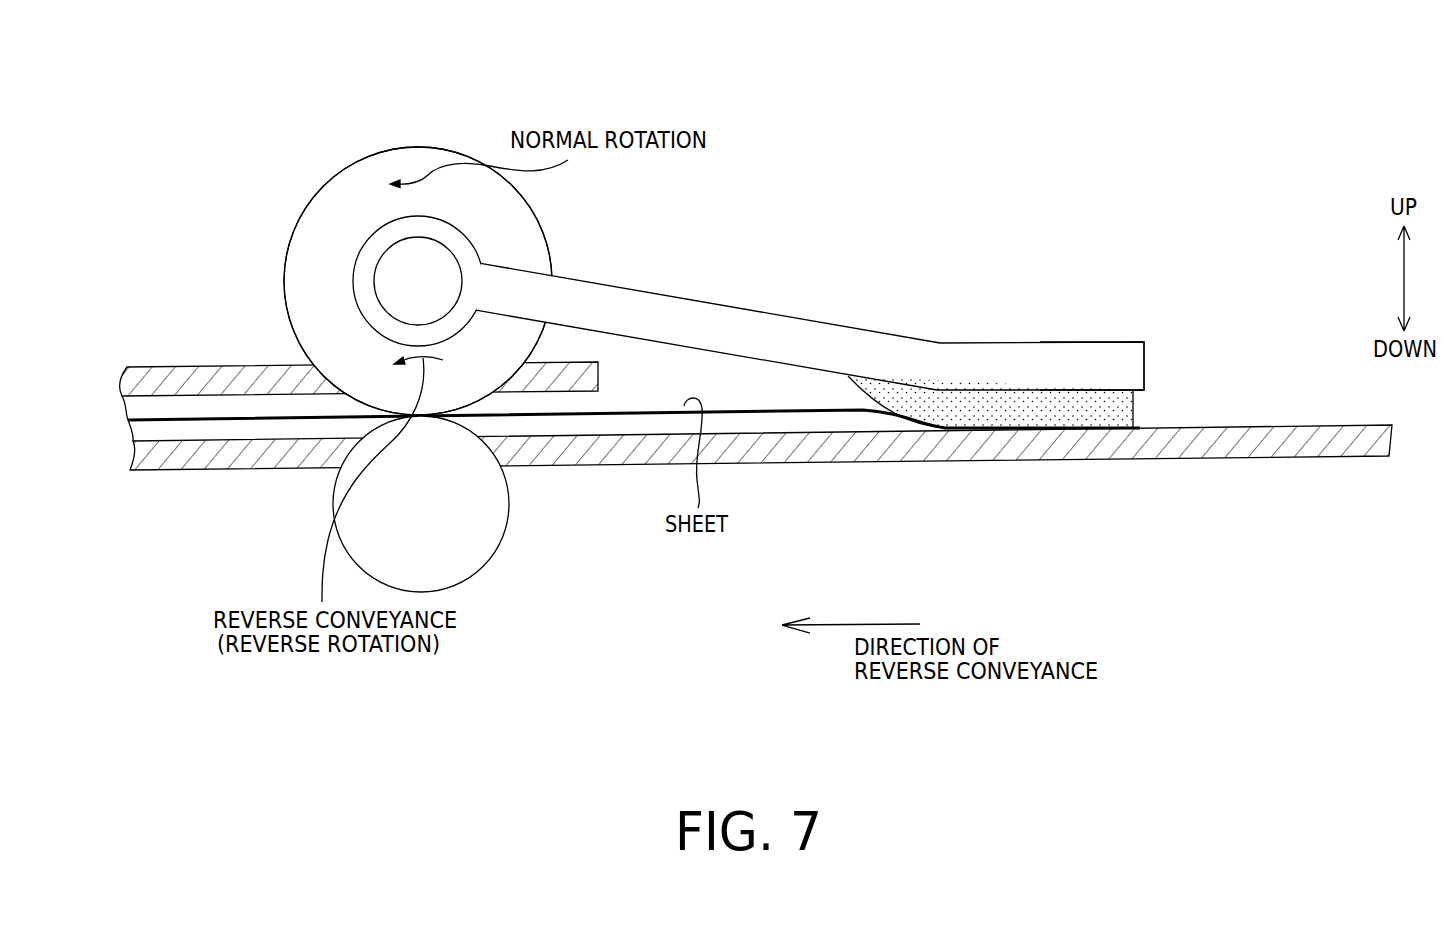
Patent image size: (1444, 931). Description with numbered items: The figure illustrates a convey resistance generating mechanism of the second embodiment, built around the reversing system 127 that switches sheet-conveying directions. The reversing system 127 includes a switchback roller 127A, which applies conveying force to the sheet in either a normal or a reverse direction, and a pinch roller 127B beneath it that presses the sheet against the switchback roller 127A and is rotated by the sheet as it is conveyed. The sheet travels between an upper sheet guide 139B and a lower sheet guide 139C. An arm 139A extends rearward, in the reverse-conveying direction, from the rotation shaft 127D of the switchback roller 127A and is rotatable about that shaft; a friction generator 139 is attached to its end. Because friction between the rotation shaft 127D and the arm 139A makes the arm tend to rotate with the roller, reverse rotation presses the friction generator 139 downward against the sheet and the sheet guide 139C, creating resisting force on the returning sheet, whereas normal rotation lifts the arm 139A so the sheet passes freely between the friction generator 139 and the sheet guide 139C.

The reversing system 127 is at (283, 363).
The switchback roller 127A is at (417, 146).
The pinch roller 127B is at (478, 572).
The rotation shaft 127D is at (403, 257).
The friction generator 139 is at (1100, 410).
The arm 139A is at (1102, 357).
The sheet guide 139B is at (182, 382).
The sheet guide 139C is at (187, 458).